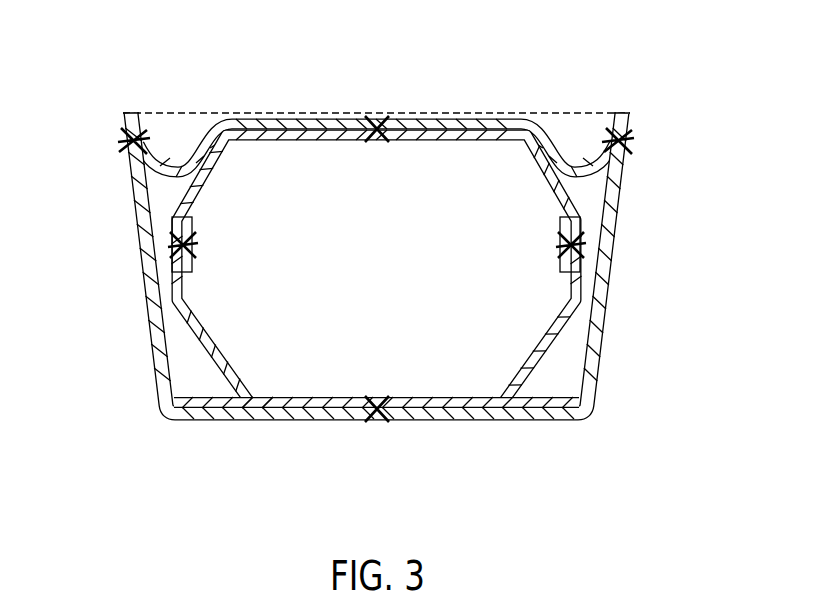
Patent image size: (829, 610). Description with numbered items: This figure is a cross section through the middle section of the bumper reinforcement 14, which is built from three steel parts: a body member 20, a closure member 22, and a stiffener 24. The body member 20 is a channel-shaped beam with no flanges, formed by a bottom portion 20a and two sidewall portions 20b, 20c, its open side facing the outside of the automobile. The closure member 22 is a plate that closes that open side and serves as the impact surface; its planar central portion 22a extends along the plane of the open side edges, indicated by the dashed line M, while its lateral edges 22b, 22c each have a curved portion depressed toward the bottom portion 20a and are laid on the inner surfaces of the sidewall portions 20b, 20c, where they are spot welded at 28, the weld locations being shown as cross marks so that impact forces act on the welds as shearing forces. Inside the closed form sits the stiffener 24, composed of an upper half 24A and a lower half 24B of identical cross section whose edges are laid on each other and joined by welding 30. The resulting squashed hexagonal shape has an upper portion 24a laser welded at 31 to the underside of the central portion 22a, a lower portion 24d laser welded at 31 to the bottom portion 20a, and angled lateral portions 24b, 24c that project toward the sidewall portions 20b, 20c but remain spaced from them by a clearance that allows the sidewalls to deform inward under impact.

The bumper reinforcement 14 is at (273, 62).
The dashed line (plane of open side edges) M is at (198, 112).
The body member 20 is at (378, 299).
The bottom portion 20a is at (342, 421).
The sidewall portion 20b is at (124, 213).
The sidewall portion 20c is at (620, 207).
The closure member 22 is at (379, 264).
The central portion 22a is at (450, 117).
The lateral edge 22b is at (138, 112).
The lateral edge 22c is at (621, 112).
The stiffener 24 is at (377, 298).
The upper half 24A is at (352, 142).
The lower half 24B is at (332, 396).
The upper portion 24a is at (283, 143).
The lateral portion 24b is at (192, 308).
The lateral portion 24c is at (560, 321).
The lower portion 24d is at (267, 396).
The spot weld 28 is at (122, 142).
The welding 30 is at (198, 246).
The laser welding 31 is at (380, 115).